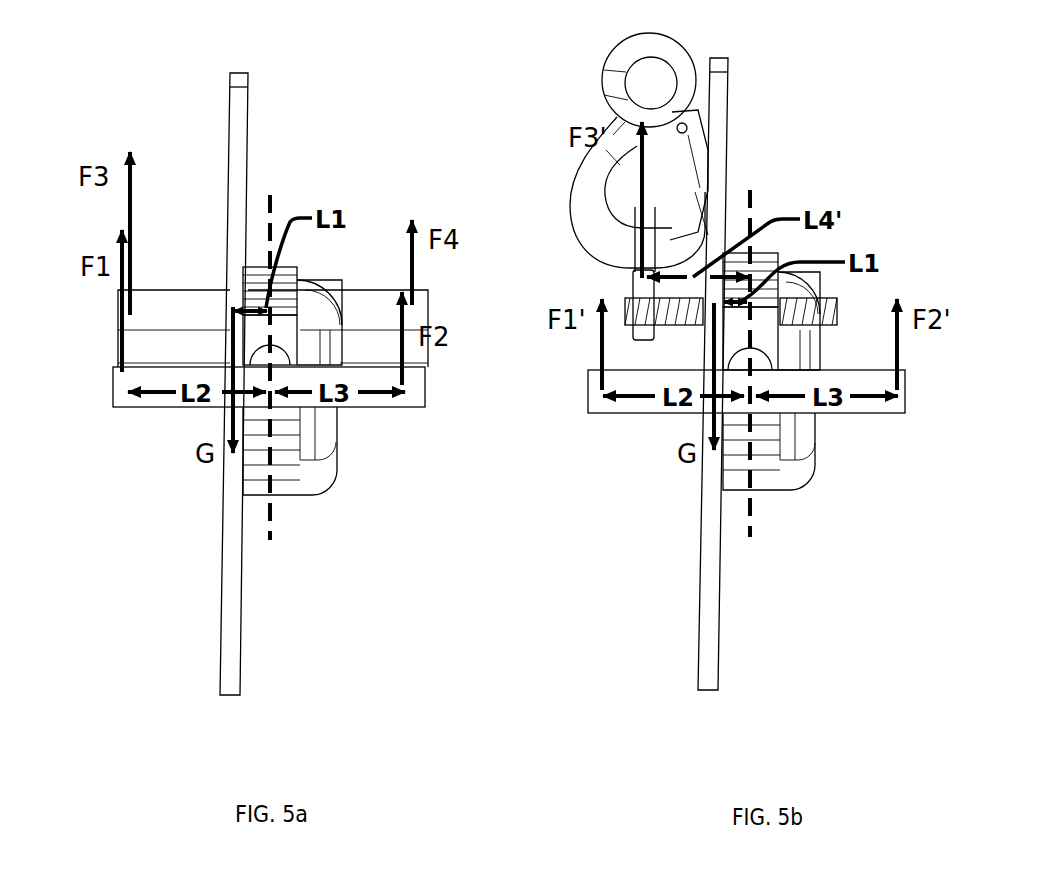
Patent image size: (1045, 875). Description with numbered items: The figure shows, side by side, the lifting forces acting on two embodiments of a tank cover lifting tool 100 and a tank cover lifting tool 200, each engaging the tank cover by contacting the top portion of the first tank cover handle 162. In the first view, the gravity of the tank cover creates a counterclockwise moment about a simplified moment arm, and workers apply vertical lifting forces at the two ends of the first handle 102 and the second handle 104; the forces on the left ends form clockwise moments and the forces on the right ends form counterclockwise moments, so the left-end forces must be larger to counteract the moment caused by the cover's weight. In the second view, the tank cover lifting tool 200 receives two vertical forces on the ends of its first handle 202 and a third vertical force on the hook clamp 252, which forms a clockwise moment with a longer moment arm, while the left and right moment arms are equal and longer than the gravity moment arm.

In FIG. 5a, the tank cover lifting tool 100 is at (91, 79).
In FIG. 5a, the first handle 102 is at (416, 398).
In FIG. 5a, the second handle 104 is at (365, 313).
In FIG. 5a, the first tank cover handle 162 is at (300, 496).
In FIG. 5b, the first tank cover handle 162 is at (758, 482).
In FIG. 5b, the tank cover lifting tool 200 is at (553, 72).
In FIG. 5b, the first handle 202 is at (640, 399).
In FIG. 5b, the hook clamp 252 is at (680, 60).